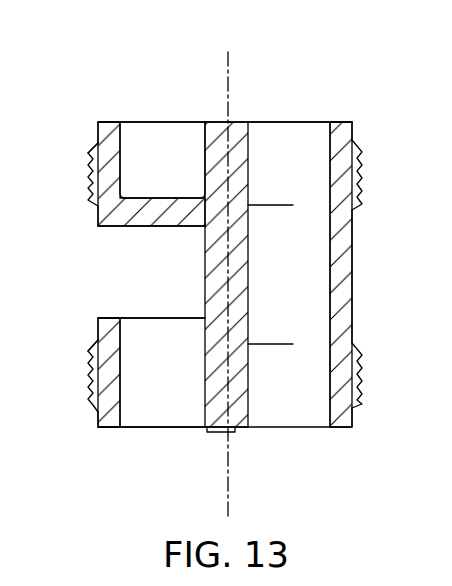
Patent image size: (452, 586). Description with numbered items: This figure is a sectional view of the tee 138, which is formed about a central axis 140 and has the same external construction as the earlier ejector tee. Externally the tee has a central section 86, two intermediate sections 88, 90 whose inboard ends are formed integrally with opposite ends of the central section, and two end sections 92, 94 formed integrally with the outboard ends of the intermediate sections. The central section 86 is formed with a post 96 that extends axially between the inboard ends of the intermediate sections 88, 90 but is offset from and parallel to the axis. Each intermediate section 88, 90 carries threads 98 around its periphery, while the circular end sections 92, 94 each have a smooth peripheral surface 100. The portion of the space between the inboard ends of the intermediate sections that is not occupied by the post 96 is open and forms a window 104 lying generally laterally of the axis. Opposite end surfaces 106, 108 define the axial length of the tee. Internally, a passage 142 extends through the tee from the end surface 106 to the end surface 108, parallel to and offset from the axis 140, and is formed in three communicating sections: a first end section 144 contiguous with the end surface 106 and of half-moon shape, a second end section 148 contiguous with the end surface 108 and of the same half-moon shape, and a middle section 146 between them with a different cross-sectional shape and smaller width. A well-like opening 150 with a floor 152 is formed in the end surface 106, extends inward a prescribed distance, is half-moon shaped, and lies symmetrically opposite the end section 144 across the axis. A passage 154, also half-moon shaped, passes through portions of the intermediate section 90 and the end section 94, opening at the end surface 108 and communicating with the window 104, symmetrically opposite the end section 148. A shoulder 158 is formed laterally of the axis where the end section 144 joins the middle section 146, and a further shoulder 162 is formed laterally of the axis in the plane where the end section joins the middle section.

The tee 138 is at (333, 92).
The central axis 140 is at (228, 52).
The passage 142 is at (322, 145).
The first end section 144 is at (248, 143).
The middle section 146 is at (248, 252).
The second end section 148 is at (249, 406).
The well-like opening 150 is at (144, 122).
The floor 152 is at (149, 198).
The passage 154 is at (122, 320).
The shoulder 158 is at (270, 205).
The shoulder 162 is at (270, 344).
The central section 86 is at (356, 258).
The intermediate section 88 is at (88, 163).
The intermediate section 90 is at (88, 364).
The end section 92 is at (88, 129).
The end section 94 is at (97, 419).
The post 96 is at (343, 297).
The threads 98 is at (89, 185).
The smooth peripheral surface 100 is at (352, 133).
The window 104 is at (128, 249).
The end surface 106 is at (108, 122).
The end surface 108 is at (108, 428).